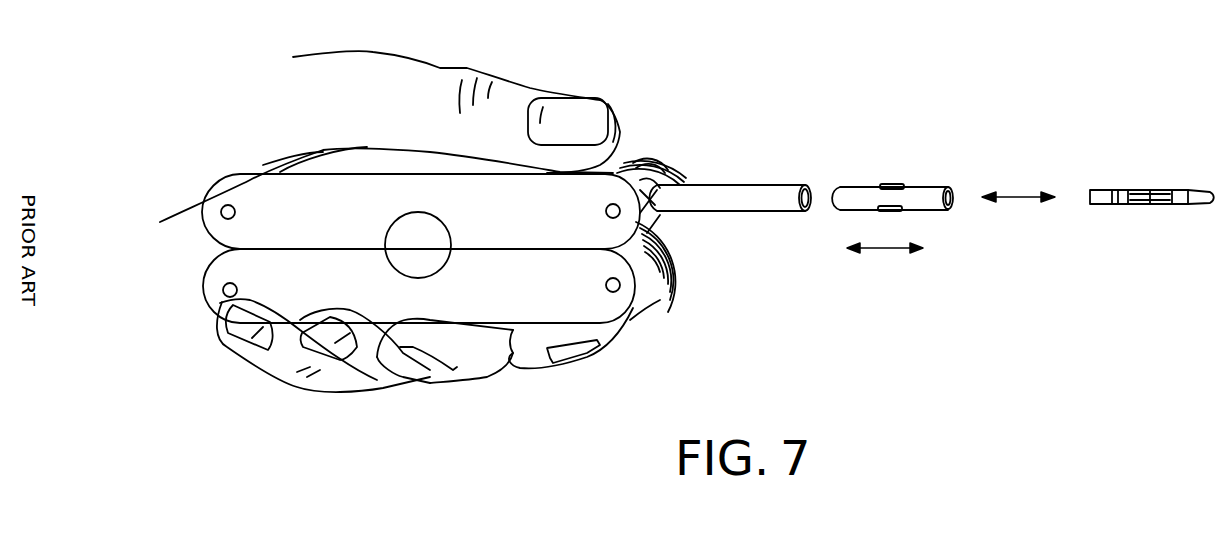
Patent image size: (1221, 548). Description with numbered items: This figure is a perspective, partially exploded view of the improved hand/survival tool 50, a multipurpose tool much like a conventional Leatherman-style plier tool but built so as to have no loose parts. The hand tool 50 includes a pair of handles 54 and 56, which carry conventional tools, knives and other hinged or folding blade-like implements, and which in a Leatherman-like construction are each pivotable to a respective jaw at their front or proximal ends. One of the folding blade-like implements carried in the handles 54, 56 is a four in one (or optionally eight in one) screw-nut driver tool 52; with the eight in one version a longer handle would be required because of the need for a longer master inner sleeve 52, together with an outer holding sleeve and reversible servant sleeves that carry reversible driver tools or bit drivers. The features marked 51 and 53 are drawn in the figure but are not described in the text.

The improved hand/survival tool 50 is at (668, 108).
The tube end ring 51 is at (812, 182).
The screw-nut driver tool / master inner sleeve 52 is at (717, 170).
The clip tabs 53 is at (903, 183).
The handle 54 is at (540, 228).
The handle 56 is at (547, 303).